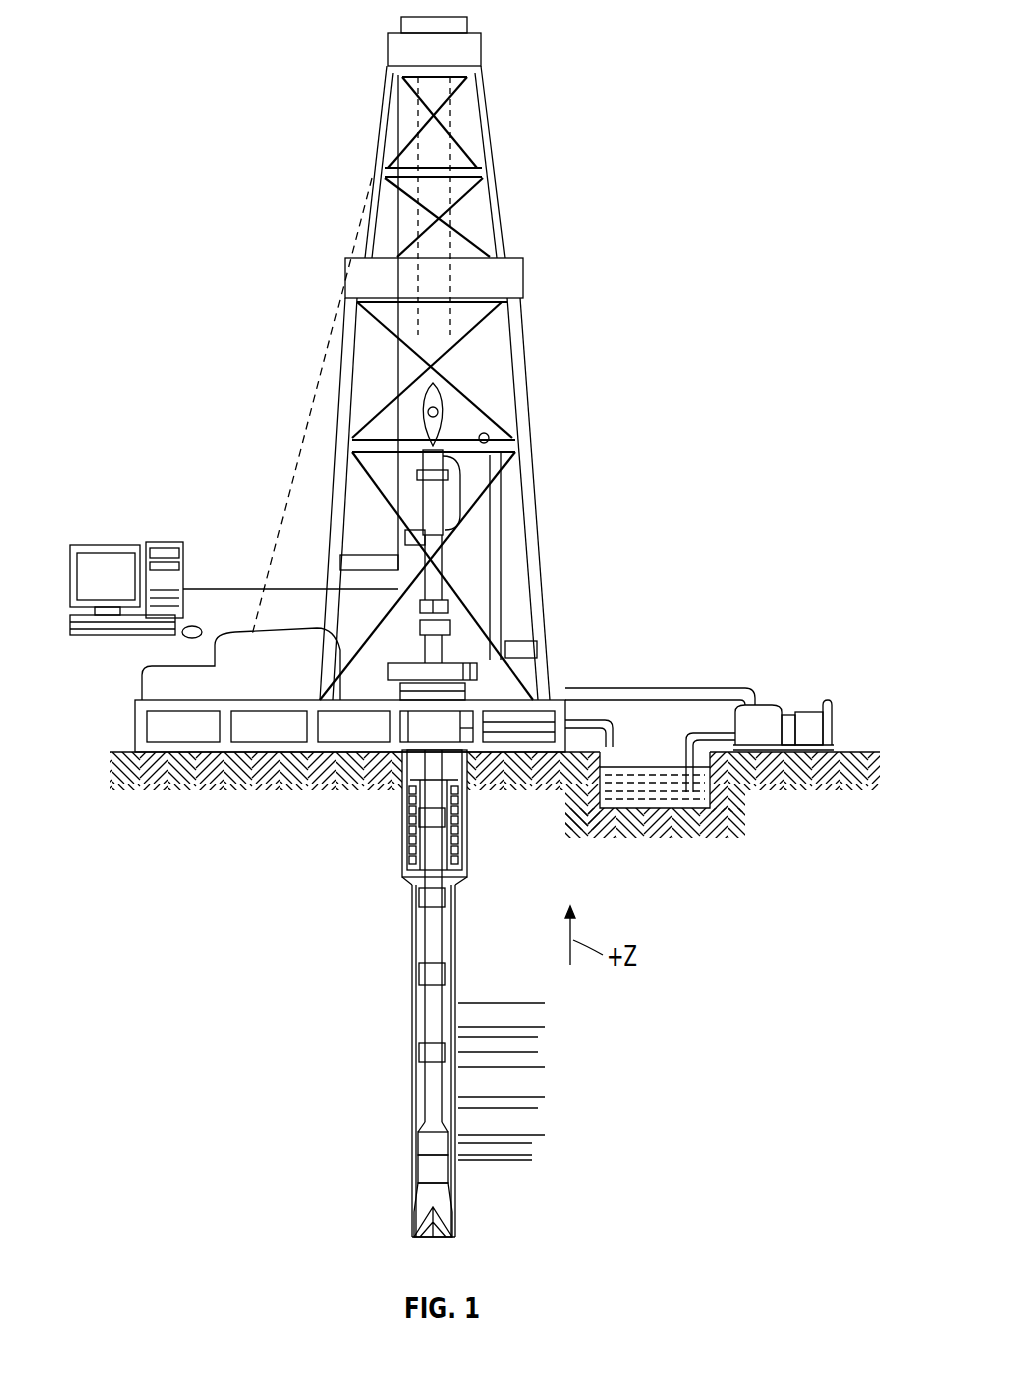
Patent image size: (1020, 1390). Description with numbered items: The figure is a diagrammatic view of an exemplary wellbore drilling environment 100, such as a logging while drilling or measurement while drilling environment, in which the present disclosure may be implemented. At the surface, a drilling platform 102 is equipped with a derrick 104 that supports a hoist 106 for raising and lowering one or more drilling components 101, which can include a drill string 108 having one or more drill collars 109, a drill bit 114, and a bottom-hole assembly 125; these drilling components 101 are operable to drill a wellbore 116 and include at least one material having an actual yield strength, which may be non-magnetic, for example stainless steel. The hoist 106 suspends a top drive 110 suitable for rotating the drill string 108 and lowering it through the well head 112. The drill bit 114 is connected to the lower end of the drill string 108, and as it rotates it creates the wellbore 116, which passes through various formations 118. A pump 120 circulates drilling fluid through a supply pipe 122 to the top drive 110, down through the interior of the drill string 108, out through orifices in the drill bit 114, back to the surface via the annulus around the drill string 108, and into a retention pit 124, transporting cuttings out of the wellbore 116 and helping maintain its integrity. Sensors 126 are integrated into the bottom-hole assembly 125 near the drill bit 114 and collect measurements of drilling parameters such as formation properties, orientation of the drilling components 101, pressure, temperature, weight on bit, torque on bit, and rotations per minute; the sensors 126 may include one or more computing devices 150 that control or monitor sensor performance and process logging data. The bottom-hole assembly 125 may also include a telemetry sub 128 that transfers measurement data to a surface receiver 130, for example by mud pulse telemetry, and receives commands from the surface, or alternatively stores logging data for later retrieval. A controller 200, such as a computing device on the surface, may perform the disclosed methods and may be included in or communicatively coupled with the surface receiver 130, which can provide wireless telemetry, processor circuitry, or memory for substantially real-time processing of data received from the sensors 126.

The wellbore drilling environment 100 is at (248, 40).
The drilling platform 102 is at (135, 730).
The derrick 104 is at (495, 205).
The hoist 106 is at (452, 416).
The drill string 108 is at (410, 936).
The drill collars 109 is at (365, 935).
The top drive 110 is at (433, 512).
The well head 112 is at (462, 660).
The drill bit 114 is at (470, 1210).
The wellbore 116 is at (455, 967).
The formations 118 is at (552, 1003).
The pump 120 is at (762, 715).
The supply pipe 122 is at (647, 688).
The retention pit 124 is at (650, 790).
The bottom-hole assembly 125 is at (344, 1150).
The sensors 126 is at (428, 1172).
The telemetry sub 128 is at (428, 1147).
The surface receiver 130 is at (435, 572).
The computing devices 150 is at (408, 1207).
The drilling components 101 is at (388, 993).
The controller 200 is at (108, 545).